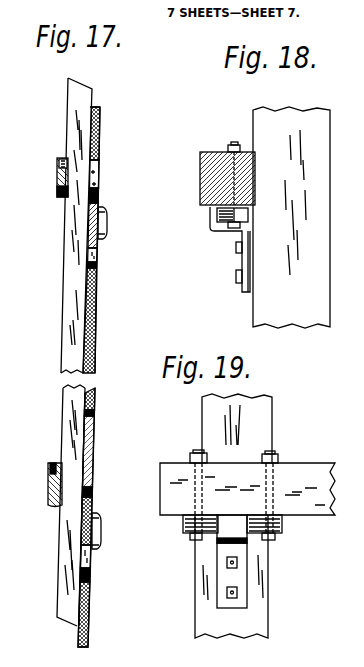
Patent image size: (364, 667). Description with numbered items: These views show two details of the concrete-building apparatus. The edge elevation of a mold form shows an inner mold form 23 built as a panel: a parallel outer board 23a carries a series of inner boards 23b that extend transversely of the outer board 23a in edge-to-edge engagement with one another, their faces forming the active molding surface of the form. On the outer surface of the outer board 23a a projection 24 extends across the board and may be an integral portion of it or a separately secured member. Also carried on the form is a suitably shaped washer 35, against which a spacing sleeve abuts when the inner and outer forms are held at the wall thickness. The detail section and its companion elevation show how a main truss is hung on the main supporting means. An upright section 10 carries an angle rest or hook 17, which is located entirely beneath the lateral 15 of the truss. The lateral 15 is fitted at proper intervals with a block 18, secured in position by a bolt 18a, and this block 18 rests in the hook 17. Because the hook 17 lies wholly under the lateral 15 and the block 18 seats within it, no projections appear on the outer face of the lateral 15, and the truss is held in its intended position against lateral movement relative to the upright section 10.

In FIG. 18, the upright section 10 is at (296, 118).
In FIG. 19, the upright section 10 is at (262, 572).
In FIG. 18, the lateral 15 is at (210, 172).
In FIG. 19, the lateral 15 is at (175, 468).
In FIG. 18, the angle rest or hook 17 is at (217, 230).
In FIG. 19, the angle rest or hook 17 is at (228, 536).
In FIG. 18, the block 18 is at (249, 216).
In FIG. 19, the block 18 is at (184, 529).
In FIG. 18, the bolt 18a is at (229, 146).
In FIG. 19, the bolt 18a is at (268, 455).
In FIG. 17, the inner mold form 23 is at (92, 108).
In FIG. 17, the outer board 23a is at (68, 423).
In FIG. 17, the inner board 23b is at (97, 293).
In FIG. 17, the projection 24 is at (57, 160).
In FIG. 17, the washer 35 is at (108, 216).